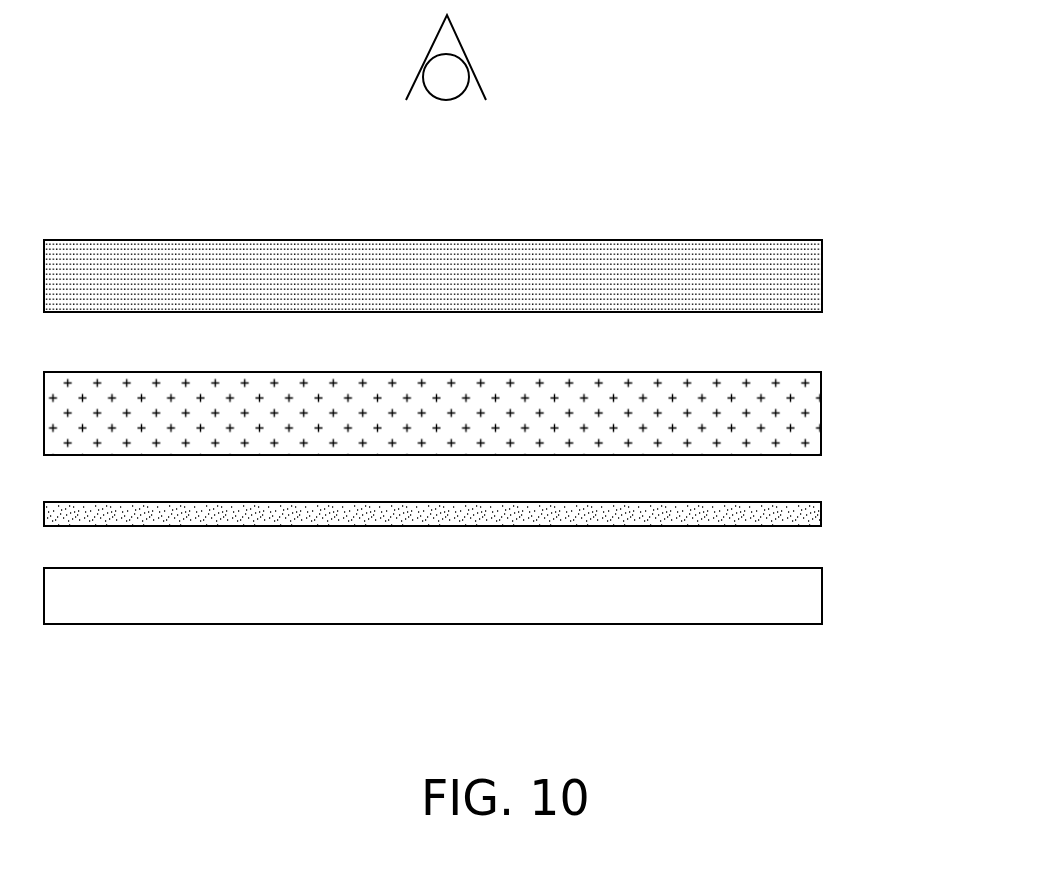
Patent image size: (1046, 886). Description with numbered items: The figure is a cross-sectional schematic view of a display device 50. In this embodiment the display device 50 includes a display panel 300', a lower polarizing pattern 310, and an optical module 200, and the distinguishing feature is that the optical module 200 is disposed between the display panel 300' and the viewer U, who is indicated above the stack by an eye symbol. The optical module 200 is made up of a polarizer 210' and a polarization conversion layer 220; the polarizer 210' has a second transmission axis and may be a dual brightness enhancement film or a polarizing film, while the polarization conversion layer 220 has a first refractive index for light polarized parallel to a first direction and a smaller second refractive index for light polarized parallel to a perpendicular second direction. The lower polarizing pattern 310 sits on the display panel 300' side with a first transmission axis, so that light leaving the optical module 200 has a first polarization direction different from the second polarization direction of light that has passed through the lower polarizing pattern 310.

The viewer U is at (460, 43).
The lower polarizing pattern 310 is at (822, 272).
The polarization conversion layer 220 is at (821, 414).
The polarizer 210' is at (471, 515).
The optical module 200 is at (501, 454).
The display panel 300' is at (472, 596).
The display device 50 is at (900, 729).